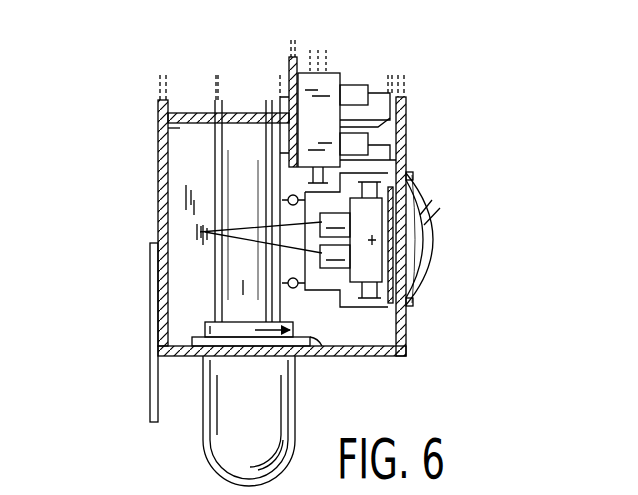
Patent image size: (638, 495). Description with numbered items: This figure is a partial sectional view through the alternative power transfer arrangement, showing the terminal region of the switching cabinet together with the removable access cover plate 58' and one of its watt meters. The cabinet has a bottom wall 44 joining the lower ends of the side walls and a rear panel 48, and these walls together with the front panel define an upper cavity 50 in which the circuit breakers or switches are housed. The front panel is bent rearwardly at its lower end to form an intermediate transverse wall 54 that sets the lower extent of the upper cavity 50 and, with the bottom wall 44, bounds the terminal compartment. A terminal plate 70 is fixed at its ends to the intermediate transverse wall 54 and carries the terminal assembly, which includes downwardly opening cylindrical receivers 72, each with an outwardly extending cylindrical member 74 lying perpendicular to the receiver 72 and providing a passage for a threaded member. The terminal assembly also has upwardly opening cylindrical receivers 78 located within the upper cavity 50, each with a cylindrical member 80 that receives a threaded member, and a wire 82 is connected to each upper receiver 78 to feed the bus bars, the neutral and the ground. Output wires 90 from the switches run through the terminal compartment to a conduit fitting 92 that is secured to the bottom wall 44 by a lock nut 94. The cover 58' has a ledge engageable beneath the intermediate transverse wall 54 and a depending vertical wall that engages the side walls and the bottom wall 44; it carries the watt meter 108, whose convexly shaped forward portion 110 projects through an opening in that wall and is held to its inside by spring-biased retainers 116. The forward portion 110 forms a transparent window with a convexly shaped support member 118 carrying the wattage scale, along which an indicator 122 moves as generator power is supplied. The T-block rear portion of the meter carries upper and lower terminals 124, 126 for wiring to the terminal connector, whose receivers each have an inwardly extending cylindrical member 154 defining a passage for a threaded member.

The bottom wall 44 is at (182, 360).
The rear panel 48 is at (158, 206).
The upper cavity 50 is at (170, 108).
The intermediate transverse wall 54 is at (170, 142).
The removable access cover plate 58' is at (451, 215).
The terminal plate 70 is at (298, 95).
The cylindrical receiver 72 is at (290, 163).
The outwardly extending cylindrical member 74 is at (392, 150).
The upwardly opening cylindrical receiver 78 is at (342, 75).
The cylindrical member 80 is at (372, 93).
The wire 82 is at (320, 73).
The output wires 90 is at (240, 312).
The conduit fitting 92 is at (248, 447).
The lock nut 94 is at (327, 346).
The watt meter 108 is at (466, 206).
The convexly-shaped forward portion 110 is at (450, 240).
The spring-biased retainer 116 is at (366, 307).
The convexly-shaped support member 118 is at (428, 262).
The indicator 122 is at (430, 275).
The upper terminal 124 is at (288, 200).
The lower terminal 126 is at (288, 283).
The inwardly extending cylindrical member 154 is at (205, 232).